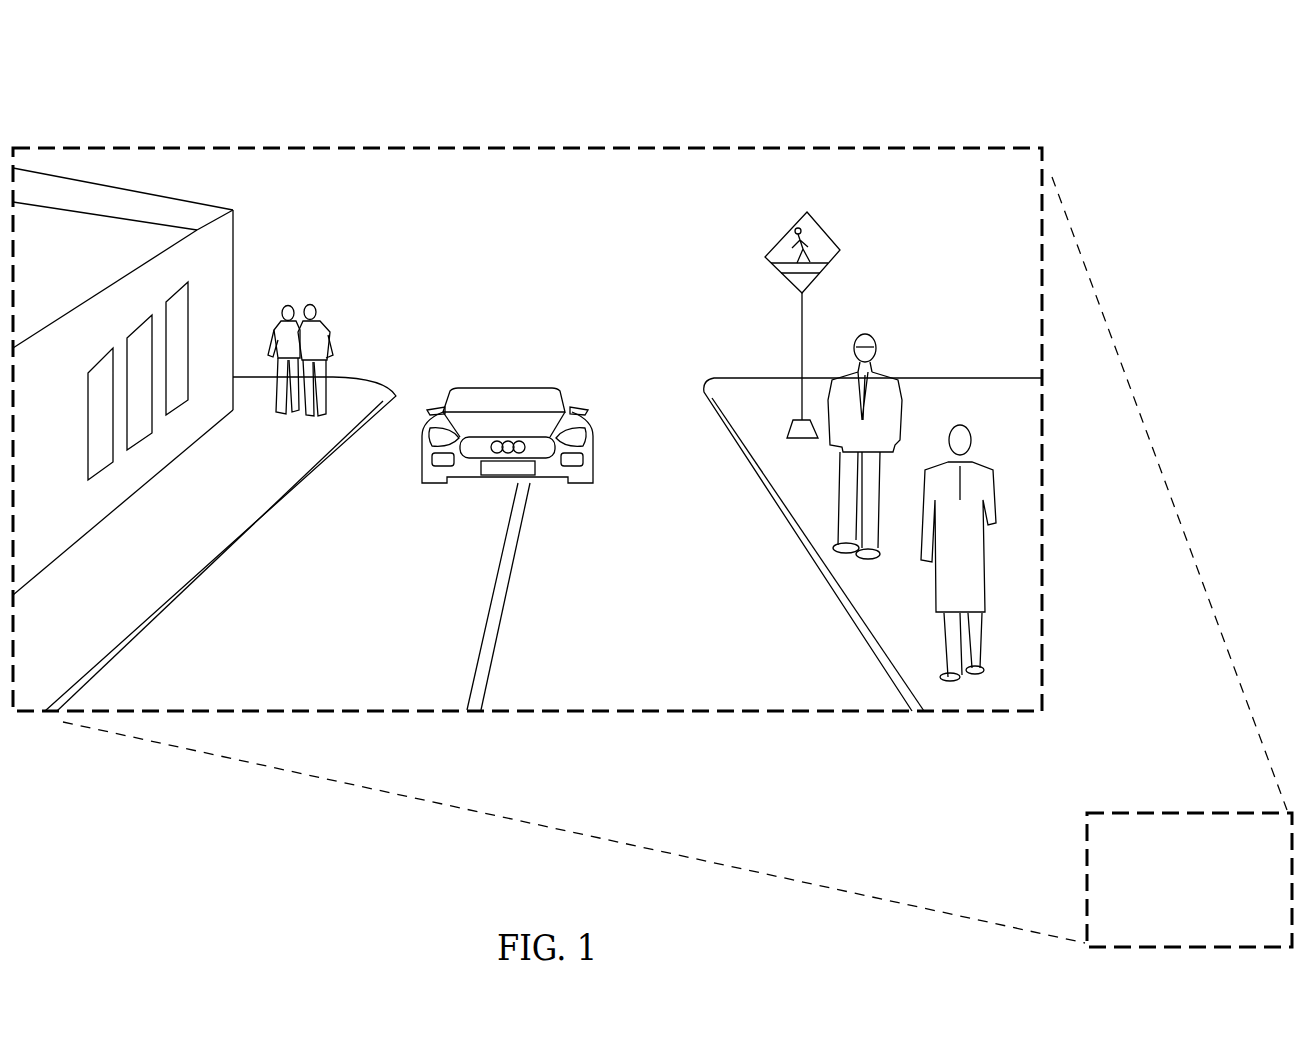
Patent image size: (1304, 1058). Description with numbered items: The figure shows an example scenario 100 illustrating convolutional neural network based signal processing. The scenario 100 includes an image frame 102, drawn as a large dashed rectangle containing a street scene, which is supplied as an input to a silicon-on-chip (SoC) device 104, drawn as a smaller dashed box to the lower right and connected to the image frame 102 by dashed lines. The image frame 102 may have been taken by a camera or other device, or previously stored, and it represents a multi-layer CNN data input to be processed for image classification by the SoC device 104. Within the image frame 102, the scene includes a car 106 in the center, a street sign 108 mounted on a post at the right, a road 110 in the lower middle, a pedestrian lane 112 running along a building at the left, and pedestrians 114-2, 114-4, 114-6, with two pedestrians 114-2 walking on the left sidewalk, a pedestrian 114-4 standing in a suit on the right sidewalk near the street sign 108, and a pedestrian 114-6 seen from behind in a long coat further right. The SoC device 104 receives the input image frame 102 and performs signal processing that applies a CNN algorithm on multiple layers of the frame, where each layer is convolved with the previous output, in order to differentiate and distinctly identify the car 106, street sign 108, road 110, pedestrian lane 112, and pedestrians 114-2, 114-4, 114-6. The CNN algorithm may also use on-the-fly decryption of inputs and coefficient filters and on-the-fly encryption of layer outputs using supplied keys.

The scenario 100 is at (1172, 101).
The image frame 102 is at (367, 148).
The silicon-on-chip (SoC) device 104 is at (1170, 929).
The car 106 is at (540, 386).
The street sign 108 is at (830, 233).
The road 110 is at (615, 606).
The pedestrian lane 112 is at (86, 568).
The pedestrians 114-2 is at (345, 325).
The pedestrians 114-4 is at (880, 343).
The pedestrians 114-6 is at (1013, 486).